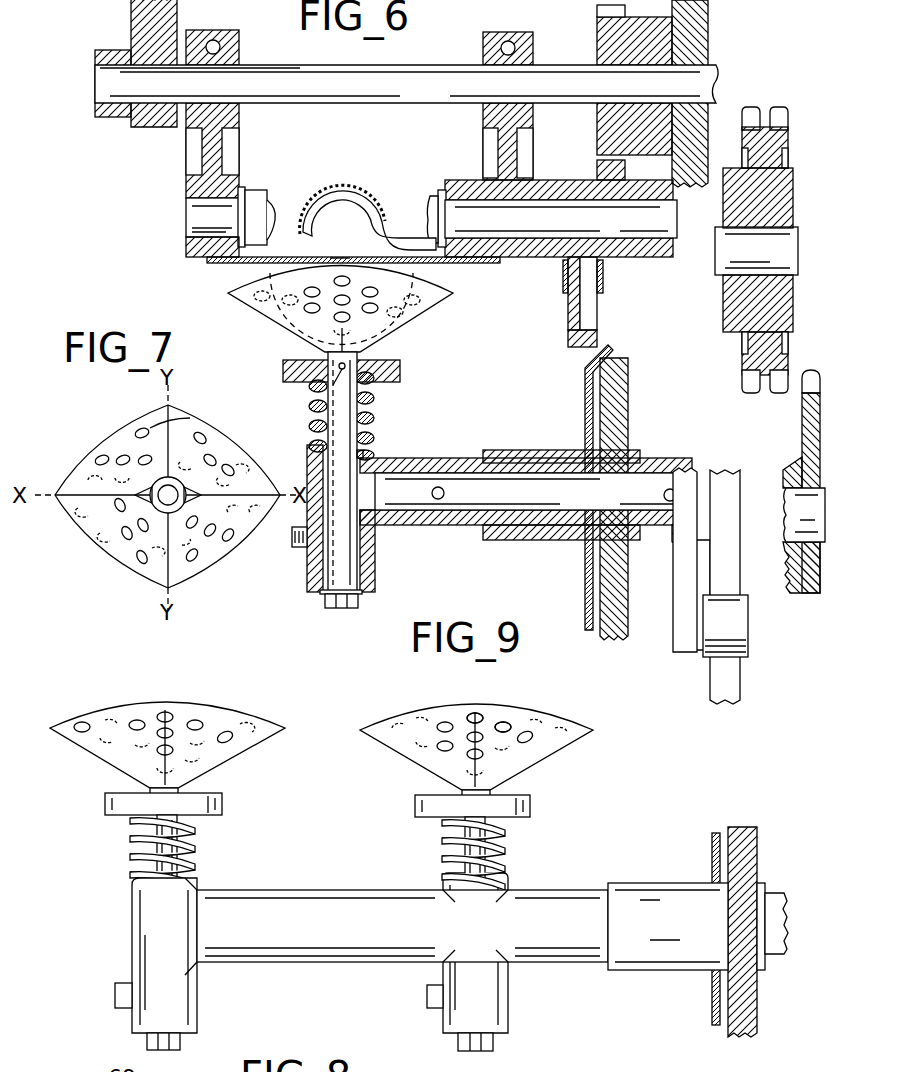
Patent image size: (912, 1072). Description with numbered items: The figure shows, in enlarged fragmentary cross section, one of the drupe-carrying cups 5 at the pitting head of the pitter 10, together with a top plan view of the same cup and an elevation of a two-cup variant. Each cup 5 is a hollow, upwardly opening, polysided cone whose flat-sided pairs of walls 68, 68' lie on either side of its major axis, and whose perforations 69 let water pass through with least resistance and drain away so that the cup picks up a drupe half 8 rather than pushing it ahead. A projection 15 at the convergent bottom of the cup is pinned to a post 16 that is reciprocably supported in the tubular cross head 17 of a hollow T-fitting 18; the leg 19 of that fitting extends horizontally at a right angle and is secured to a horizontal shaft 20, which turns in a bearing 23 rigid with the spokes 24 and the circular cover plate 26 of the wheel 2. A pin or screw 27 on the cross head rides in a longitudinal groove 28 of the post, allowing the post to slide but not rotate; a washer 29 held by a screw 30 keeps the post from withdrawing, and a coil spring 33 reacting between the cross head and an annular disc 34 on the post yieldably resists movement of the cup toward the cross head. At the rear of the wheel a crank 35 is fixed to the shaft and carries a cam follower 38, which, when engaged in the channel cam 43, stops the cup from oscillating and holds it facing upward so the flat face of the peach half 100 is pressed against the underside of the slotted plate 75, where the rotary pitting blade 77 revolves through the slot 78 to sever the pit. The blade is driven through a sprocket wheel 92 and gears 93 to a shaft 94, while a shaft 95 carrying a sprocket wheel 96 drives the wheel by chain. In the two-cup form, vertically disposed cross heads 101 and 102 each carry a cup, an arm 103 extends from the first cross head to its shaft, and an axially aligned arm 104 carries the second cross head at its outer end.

In FIG. 6, the wheel 2 is at (620, 484).
In FIG. 6, the cup 5 is at (343, 310).
In FIG. 9, the cup 5 is at (321, 723).
In FIG. 6, the drupe half 8 is at (433, 305).
In FIG. 6, the pitter 10 is at (150, 200).
In FIG. 6, the projection 15 is at (327, 390).
In FIG. 6, the post 16 is at (357, 408).
In FIG. 6, the cross head 17 is at (348, 531).
In FIG. 9, the cross head 17 is at (130, 964).
In FIG. 6, the T-fitting 18 is at (380, 540).
In FIG. 6, the leg 19 is at (526, 500).
In FIG. 6, the horizontal shaft 20 is at (556, 495).
In FIG. 6, the bearing 23 is at (515, 450).
In FIG. 6, the spoke 24 is at (628, 372).
In FIG. 9, the spoke 24 is at (742, 830).
In FIG. 6, the cover plate 26 is at (585, 578).
In FIG. 9, the cover plate 26 is at (712, 855).
In FIG. 6, the pin or screw 27 is at (292, 545).
In FIG. 6, the groove 28 is at (370, 455).
In FIG. 6, the washer 29 is at (362, 600).
In FIG. 6, the screw 30 is at (340, 612).
In FIG. 6, the coil spring 33 is at (310, 427).
In FIG. 9, the coil spring 33 is at (130, 843).
In FIG. 6, the annular disc 34 is at (400, 368).
In FIG. 6, the crank 35 is at (665, 640).
In FIG. 6, the cam follower 38 is at (740, 608).
In FIG. 6, the channel cam 43 is at (730, 685).
In FIG. 7, the walls 68 is at (167, 497).
In FIG. 9, the walls 68 is at (167, 722).
In FIG. 7, the walls 68' is at (193, 404).
In FIG. 7, the perforations 69 is at (140, 430).
In FIG. 6, the slotted plate 75 is at (486, 263).
In FIG. 6, the rotary pitting blade 77 is at (355, 185).
In FIG. 6, the slot 78 is at (338, 258).
In FIG. 6, the sprocket wheel 92 is at (785, 180).
In FIG. 6, the gears 93 is at (597, 137).
In FIG. 6, the shaft 94 is at (790, 230).
In FIG. 6, the shaft 95 is at (793, 518).
In FIG. 6, the sprocket wheel 96 is at (805, 430).
In FIG. 6, the peach half 100 is at (272, 262).
In FIG. 9, the cross head 101 is at (509, 893).
In FIG. 9, the cross head 102 is at (196, 890).
In FIG. 9, the arm 103 is at (578, 950).
In FIG. 9, the arm 104 is at (352, 900).